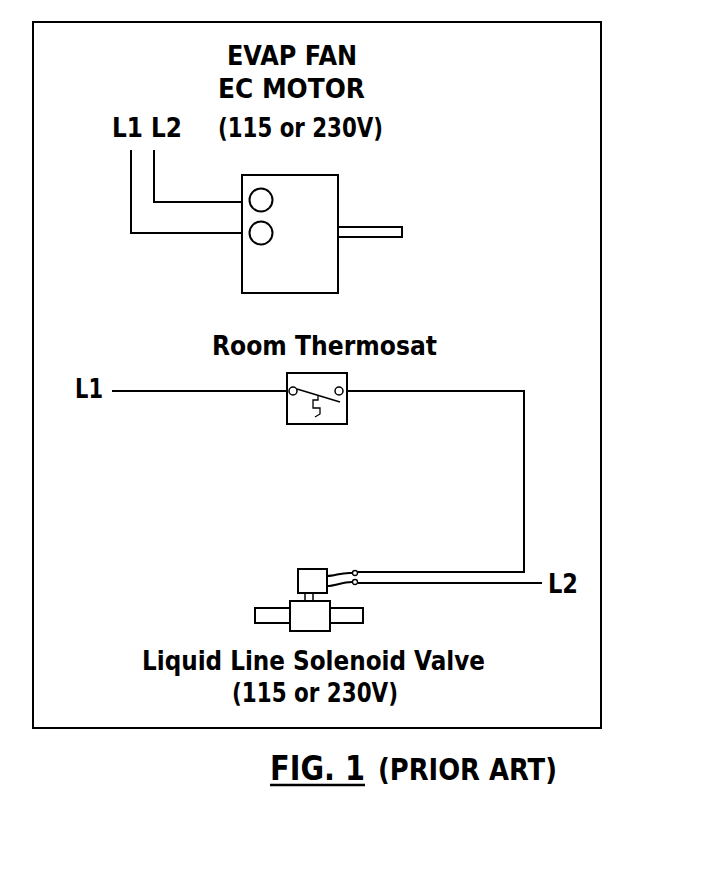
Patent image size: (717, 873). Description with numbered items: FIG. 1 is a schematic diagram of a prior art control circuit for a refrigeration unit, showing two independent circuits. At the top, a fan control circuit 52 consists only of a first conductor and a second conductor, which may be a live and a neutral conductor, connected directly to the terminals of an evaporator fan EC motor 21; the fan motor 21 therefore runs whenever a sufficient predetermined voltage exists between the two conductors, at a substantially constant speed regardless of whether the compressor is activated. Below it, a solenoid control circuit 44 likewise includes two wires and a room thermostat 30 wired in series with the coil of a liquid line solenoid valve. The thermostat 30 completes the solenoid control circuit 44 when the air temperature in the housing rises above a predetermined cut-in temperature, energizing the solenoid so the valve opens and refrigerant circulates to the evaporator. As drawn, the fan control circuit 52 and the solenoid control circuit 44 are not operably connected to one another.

The fan motor 21 is at (330, 272).
The fan control circuit 52 is at (154, 244).
The thermostat 30 is at (280, 421).
The solenoid control circuit 44 is at (536, 499).